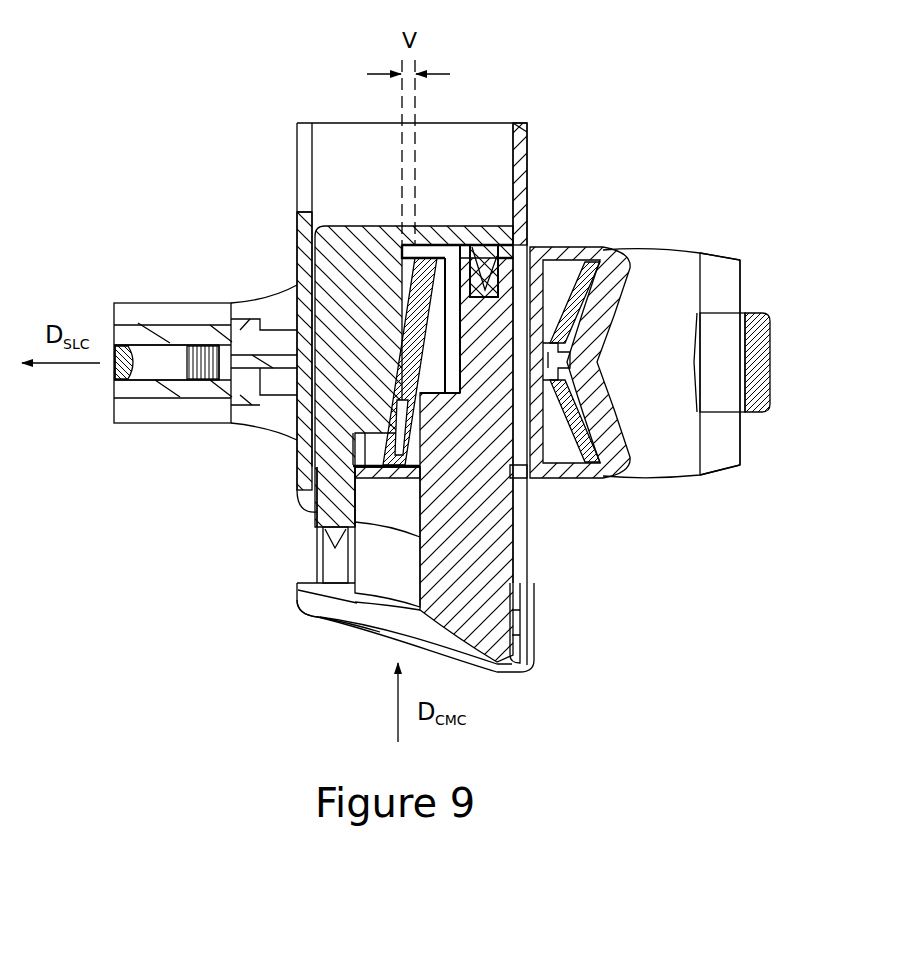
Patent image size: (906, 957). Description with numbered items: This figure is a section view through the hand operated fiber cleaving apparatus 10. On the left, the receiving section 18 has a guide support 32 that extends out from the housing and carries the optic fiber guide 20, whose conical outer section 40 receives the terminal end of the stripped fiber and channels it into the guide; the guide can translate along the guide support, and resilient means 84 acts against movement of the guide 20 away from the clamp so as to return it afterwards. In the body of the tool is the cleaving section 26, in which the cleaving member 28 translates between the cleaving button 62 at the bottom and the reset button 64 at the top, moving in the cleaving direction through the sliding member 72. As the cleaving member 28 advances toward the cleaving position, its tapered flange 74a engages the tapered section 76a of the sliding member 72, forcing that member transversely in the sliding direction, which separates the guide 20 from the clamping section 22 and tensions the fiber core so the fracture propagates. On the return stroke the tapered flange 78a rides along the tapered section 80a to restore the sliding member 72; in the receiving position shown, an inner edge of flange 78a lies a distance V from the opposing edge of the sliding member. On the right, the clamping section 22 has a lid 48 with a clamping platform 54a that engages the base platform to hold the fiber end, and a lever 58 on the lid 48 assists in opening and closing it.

The apparatus 10 is at (258, 292).
The receiving section 18 is at (178, 300).
The guide support 32 is at (133, 333).
The optic fiber guide 20 is at (163, 366).
The conical outer section 40 is at (152, 362).
The resilient means 84 is at (199, 378).
The tapered flange 78a is at (316, 258).
The sliding member 72 is at (400, 245).
The reset button 64 is at (446, 232).
The tapered section 76a is at (484, 285).
The tapered flange 74a is at (433, 422).
The cleaving button 62 is at (363, 627).
The cleaving section 26 is at (318, 617).
The cleaving member 28 is at (512, 667).
The tapered section 80a is at (390, 403).
The clamping platform 54a is at (582, 258).
The lid 48 is at (657, 273).
The clamping section 22 is at (725, 473).
The lever 58 is at (755, 315).